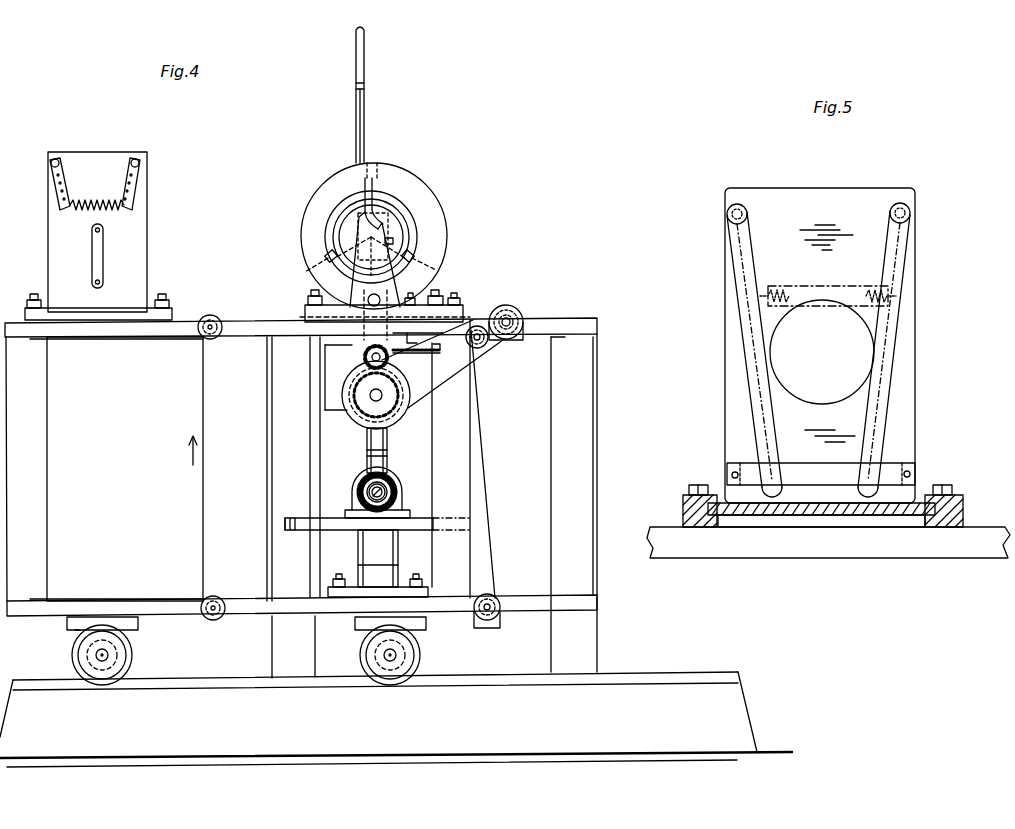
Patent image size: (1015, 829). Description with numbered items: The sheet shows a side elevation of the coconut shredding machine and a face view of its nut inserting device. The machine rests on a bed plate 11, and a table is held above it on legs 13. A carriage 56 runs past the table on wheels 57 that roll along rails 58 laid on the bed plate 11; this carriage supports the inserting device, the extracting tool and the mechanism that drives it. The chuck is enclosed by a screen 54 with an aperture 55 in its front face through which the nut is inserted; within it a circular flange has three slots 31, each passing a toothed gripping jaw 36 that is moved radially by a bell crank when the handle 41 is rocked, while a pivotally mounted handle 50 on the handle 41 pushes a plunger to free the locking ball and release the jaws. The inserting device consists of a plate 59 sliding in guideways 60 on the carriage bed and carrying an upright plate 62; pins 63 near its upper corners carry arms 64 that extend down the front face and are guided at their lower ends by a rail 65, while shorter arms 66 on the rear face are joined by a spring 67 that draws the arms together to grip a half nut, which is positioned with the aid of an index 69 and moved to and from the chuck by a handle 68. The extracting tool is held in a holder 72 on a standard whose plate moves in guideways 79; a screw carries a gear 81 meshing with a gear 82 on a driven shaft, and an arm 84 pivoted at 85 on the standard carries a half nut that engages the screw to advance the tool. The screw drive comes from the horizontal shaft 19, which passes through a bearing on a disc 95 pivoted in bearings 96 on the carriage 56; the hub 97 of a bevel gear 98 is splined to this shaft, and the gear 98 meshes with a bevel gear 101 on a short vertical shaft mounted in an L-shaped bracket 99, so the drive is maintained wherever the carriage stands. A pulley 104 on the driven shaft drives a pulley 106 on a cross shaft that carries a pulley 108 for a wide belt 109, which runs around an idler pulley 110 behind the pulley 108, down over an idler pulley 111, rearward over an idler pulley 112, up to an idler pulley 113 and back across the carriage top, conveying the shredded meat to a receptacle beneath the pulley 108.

In FIG. 4, the bed plate 11 is at (653, 688).
In FIG. 4, the legs 13 is at (597, 427).
In FIG. 4, the horizontal shaft 19 is at (364, 492).
In FIG. 4, the slots 31 is at (377, 163).
In FIG. 4, the gripping jaw 36 is at (330, 250).
In FIG. 4, the handle 41 is at (365, 67).
In FIG. 4, the pivotally mounted handle 50 is at (364, 78).
In FIG. 4, the screen 54 is at (446, 210).
In FIG. 4, the aperture 55 is at (417, 230).
In FIG. 4, the carriage 56 is at (47, 482).
In FIG. 4, the wheels 57 is at (128, 652).
In FIG. 4, the rails 58 is at (238, 682).
In FIG. 5, the plate 59 is at (800, 512).
In FIG. 5, the guideways 60 is at (700, 528).
In FIG. 4, the upright plate 62 is at (140, 222).
In FIG. 5, the upright plate 62 is at (907, 361).
In FIG. 5, the pins 63 is at (729, 219).
In FIG. 5, the arms 64 is at (748, 340).
In FIG. 5, the rail 65 is at (890, 463).
In FIG. 4, the shorter arms 66 is at (53, 182).
In FIG. 4, the spring 67 is at (97, 198).
In FIG. 4, the handle 68 is at (102, 253).
In FIG. 5, the index 69 is at (793, 400).
In FIG. 4, the holder 72 is at (381, 212).
In FIG. 4, the guideways 79 is at (303, 300).
In FIG. 4, the gear 81 is at (345, 353).
In FIG. 4, the gear 82 is at (350, 420).
In FIG. 4, the arm 84 is at (373, 187).
In FIG. 4, the pivot 85 is at (381, 294).
In FIG. 4, the disc 95 is at (332, 517).
In FIG. 4, the bearings 96 is at (365, 575).
In FIG. 4, the hub 97 is at (396, 497).
In FIG. 4, the bevel gear 98 is at (395, 490).
In FIG. 4, the L-shaped bracket 99 is at (367, 452).
In FIG. 4, the bevel gear 101 is at (388, 483).
In FIG. 4, the pulley 104 is at (395, 424).
In FIG. 4, the pulley 106 is at (503, 303).
In FIG. 4, the pulley 108 is at (517, 308).
In FIG. 4, the belt 109 is at (487, 482).
In FIG. 4, the idler pulley 110 is at (481, 349).
In FIG. 4, the idler pulley 111 is at (496, 597).
In FIG. 4, the idler pulley 112 is at (215, 596).
In FIG. 4, the idler pulley 113 is at (210, 316).